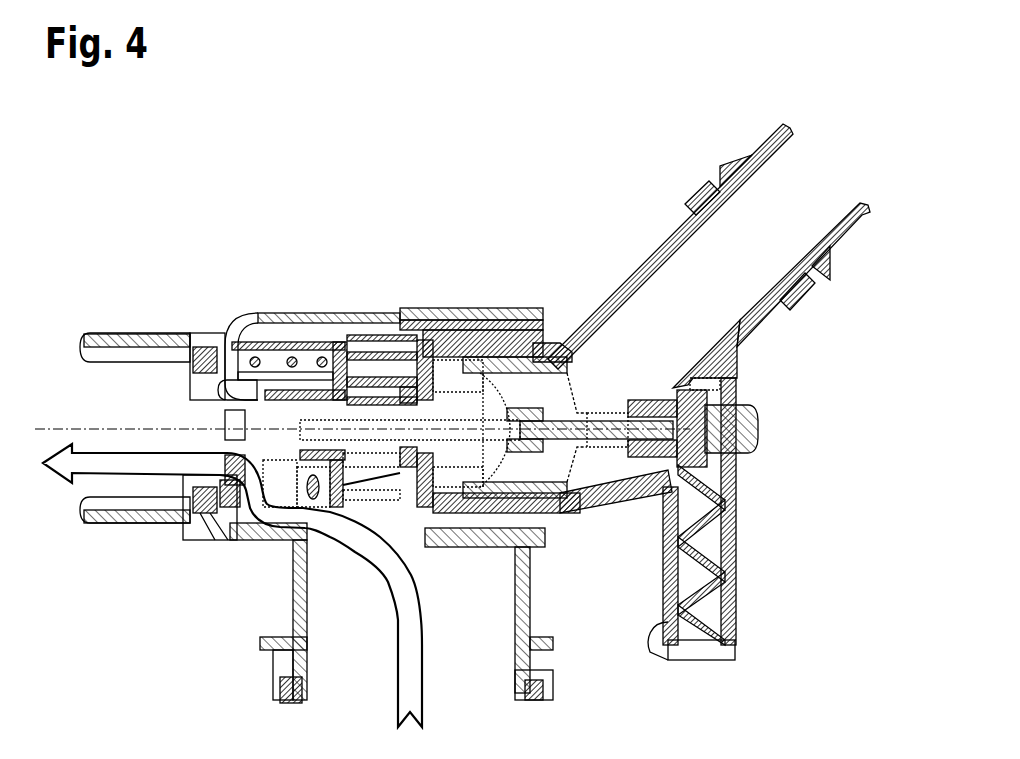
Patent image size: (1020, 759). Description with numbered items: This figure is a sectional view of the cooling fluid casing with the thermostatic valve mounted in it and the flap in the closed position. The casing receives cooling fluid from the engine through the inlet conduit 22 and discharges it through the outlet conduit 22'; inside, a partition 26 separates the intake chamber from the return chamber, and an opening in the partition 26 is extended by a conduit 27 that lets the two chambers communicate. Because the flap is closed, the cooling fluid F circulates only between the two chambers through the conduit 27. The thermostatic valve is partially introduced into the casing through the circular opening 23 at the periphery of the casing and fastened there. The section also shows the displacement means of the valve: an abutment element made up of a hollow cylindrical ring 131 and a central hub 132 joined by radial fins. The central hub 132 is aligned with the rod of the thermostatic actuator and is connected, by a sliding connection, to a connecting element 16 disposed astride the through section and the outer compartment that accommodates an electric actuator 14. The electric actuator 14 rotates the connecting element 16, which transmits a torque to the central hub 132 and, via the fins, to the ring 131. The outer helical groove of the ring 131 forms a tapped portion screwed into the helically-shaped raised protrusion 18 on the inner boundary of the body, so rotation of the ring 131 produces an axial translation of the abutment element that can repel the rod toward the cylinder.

The electric actuator 14 is at (758, 412).
The connecting element 16 is at (652, 453).
The helically-shaped raised protrusion 18 is at (533, 355).
The inlet conduit 22 is at (520, 616).
The outlet conduit 22' is at (135, 460).
The circular opening 23 is at (533, 315).
The partition 26 is at (203, 490).
The conduit 27 is at (210, 394).
The hollow cylindrical ring 131 is at (567, 368).
The central hub 132 is at (601, 415).
The cooling fluid F is at (408, 652).